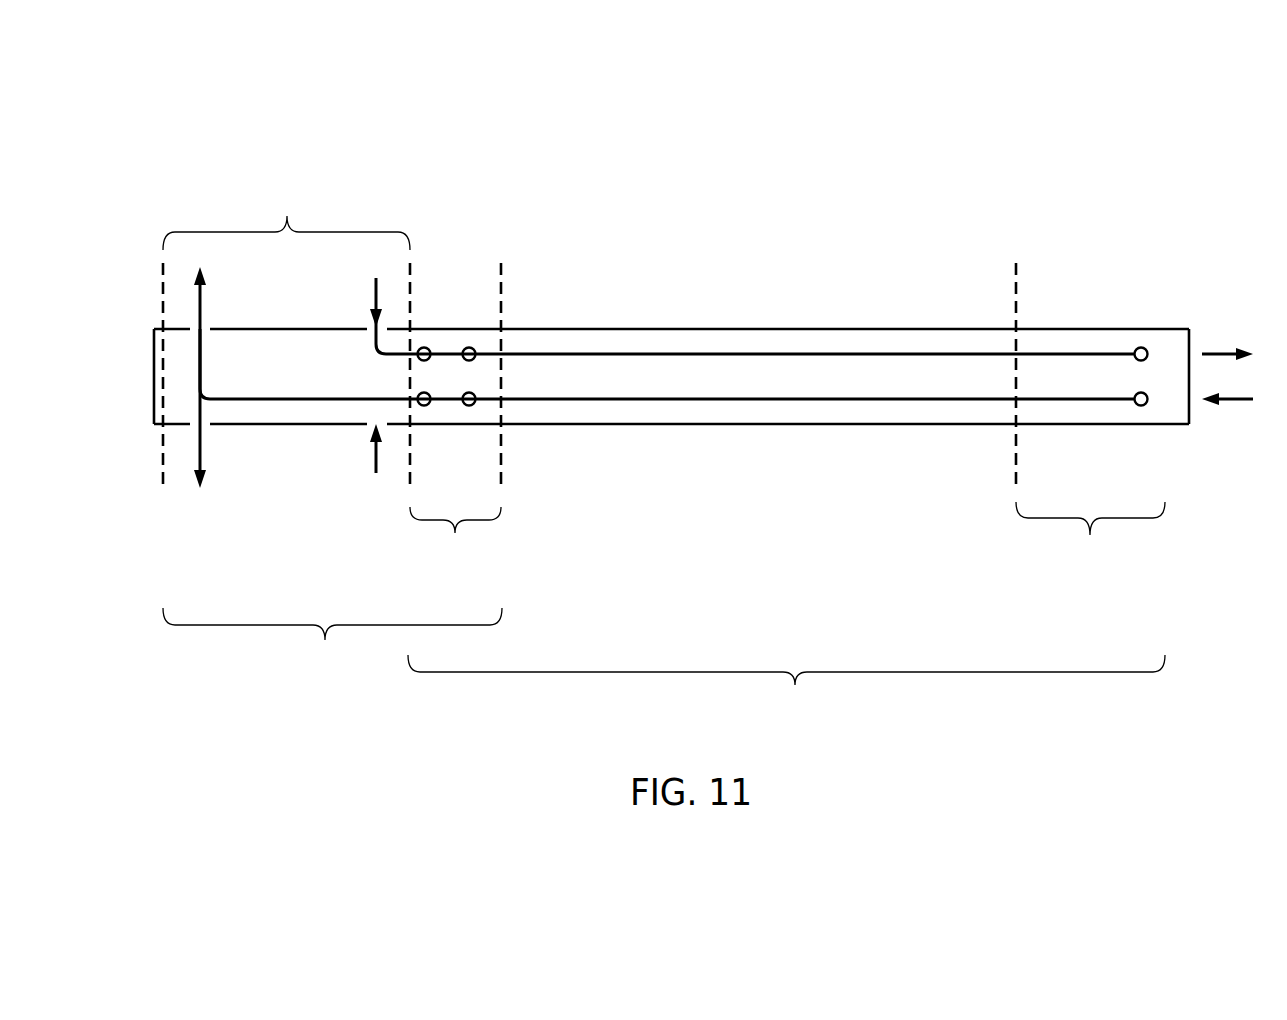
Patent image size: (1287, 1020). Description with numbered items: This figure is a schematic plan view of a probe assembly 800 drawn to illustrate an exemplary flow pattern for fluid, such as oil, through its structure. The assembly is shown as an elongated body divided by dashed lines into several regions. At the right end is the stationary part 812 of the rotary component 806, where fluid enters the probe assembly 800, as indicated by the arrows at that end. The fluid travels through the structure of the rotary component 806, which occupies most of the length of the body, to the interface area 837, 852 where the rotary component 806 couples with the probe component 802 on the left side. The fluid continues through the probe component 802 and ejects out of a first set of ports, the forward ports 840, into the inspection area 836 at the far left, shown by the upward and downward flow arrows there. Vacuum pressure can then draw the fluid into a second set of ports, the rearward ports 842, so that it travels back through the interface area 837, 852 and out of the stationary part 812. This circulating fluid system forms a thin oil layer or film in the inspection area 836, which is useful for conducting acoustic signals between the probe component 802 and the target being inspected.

The probe assembly 800 is at (1048, 146).
The probe component 802 is at (325, 640).
The rotary component 806 is at (795, 685).
The stationary part 812 is at (1090, 535).
The inspection area 836 is at (287, 216).
The interface area 837 is at (455, 533).
The interface area 852 is at (501, 474).
The forward ports 840 is at (213, 452).
The rearward ports 842 is at (363, 453).